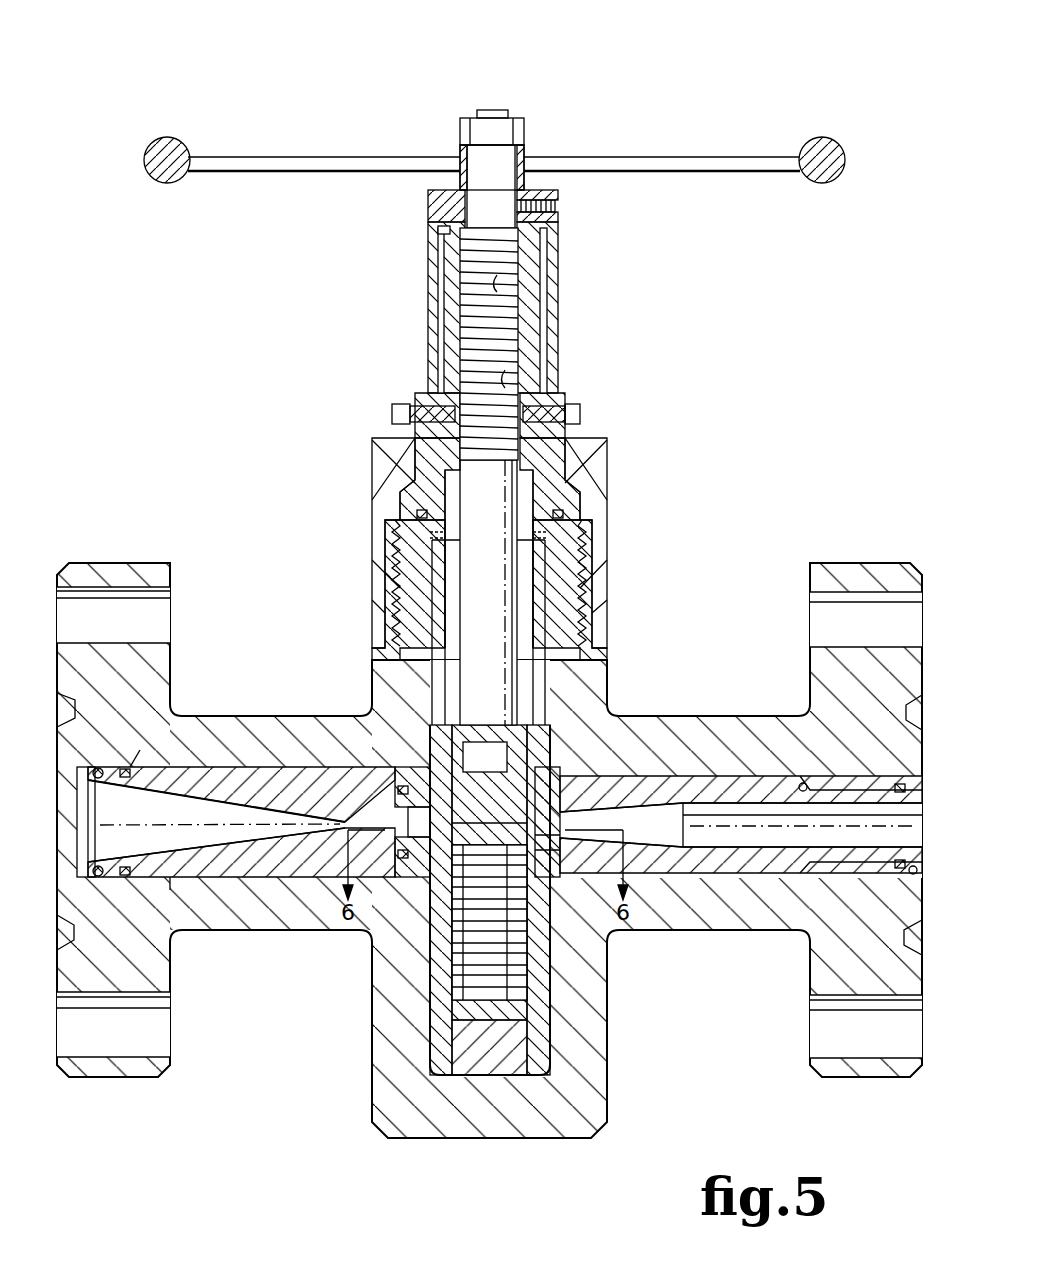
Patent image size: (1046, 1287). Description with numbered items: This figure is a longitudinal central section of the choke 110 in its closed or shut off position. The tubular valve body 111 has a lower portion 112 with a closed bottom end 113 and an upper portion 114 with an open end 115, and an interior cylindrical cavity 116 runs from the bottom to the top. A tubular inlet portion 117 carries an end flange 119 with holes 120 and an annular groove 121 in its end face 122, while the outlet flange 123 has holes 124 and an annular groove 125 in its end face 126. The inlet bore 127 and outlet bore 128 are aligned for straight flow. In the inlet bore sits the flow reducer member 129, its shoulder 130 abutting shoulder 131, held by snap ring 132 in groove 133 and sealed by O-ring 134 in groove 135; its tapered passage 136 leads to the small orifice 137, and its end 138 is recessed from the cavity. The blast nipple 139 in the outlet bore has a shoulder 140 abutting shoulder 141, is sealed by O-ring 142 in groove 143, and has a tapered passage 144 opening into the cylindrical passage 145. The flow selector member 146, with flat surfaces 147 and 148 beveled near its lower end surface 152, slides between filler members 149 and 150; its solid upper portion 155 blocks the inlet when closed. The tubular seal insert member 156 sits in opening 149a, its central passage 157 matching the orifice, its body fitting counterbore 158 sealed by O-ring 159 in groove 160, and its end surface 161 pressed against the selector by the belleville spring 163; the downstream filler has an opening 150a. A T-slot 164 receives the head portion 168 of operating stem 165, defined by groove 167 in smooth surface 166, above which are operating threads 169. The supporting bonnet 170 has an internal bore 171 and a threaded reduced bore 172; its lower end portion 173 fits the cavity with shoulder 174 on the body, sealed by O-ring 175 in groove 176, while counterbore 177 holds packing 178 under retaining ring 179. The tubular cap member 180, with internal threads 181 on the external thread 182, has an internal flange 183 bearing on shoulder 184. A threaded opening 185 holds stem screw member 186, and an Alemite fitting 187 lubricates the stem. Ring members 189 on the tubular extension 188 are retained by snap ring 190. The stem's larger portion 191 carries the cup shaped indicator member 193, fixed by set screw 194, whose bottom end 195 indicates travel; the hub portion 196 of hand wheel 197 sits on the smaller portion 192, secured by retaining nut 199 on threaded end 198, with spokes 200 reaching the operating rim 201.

The choke 110 is at (330, 700).
The valve body 111 is at (395, 668).
The lower portion 112 is at (607, 1100).
The closed bottom end 113 is at (520, 1138).
The upper portion 114 is at (605, 668).
The open end 115 is at (585, 545).
The interior cylindrical cavity 116 is at (440, 625).
The tubular inlet portion 117 is at (255, 915).
The end flange 119 is at (172, 975).
The holes 120 is at (160, 1057).
The annular groove 121 is at (85, 940).
The end face 122 is at (62, 1000).
The flange 123 is at (812, 960).
The holes 124 is at (820, 1058).
The annular groove 125 is at (906, 945).
The end face 126 is at (922, 990).
The internal bore 127 is at (295, 877).
The internal bore 128 is at (705, 873).
The flow reducer member 129 is at (258, 785).
The shoulder 130 is at (140, 750).
The shoulder 131 is at (120, 862).
The snap ring 132 is at (98, 767).
The peripheral groove 133 is at (98, 877).
The O-ring 134 is at (180, 930).
The peripheral groove 135 is at (124, 768).
The tapered interior passage 136 is at (200, 790).
The orifice 137 is at (330, 822).
The end of flow reducer 138 is at (440, 900).
The blast nipple 139 is at (740, 790).
The shoulder 140 is at (900, 873).
The shoulder 141 is at (830, 790).
The O-ring 142 is at (916, 878).
The peripheral groove 143 is at (900, 790).
The tapered passage 144 is at (630, 810).
The cylindrical passage 145 is at (740, 812).
The flow selector member 146 is at (436, 700).
The flat surface 147 is at (428, 745).
The flat surface 148 is at (555, 765).
The filler member 149 is at (440, 1030).
The opening 149a is at (400, 805).
The filler member 150 is at (550, 1020).
The opening 150a is at (638, 951).
The lower end surface 152 is at (490, 1075).
The upper portion 155 is at (545, 840).
The tubular seal insert member 156 is at (460, 840).
The central passage 157 is at (400, 870).
The counterbore 158 is at (405, 784).
The O-ring 159 is at (415, 877).
The peripheral groove 160 is at (395, 768).
The end surface 161 is at (470, 785).
The belleville spring 163 is at (455, 930).
The T-slot 164 is at (560, 730).
The operating stem 165 is at (470, 630).
The smooth cylindrical outer surface 166 is at (585, 590).
The groove 167 is at (508, 680).
The head portion 168 is at (482, 742).
The operating threads 169 is at (505, 300).
The supporting bonnet 170 is at (415, 490).
The internal bore 171 is at (510, 378).
The reduced diameter bore 172 is at (505, 280).
The lower end portion 173 is at (585, 570).
The shoulder 174 is at (565, 532).
The O-ring 175 is at (417, 512).
The peripheral groove 176 is at (400, 525).
The counterbore 177 is at (455, 490).
The packing 178 is at (545, 500).
The retaining ring 179 is at (445, 548).
The tubular cap member 180 is at (385, 590).
The internal threads 181 is at (590, 610).
The externally threaded surface 182 is at (590, 630).
The internal flange 183 is at (560, 470).
The shoulder 184 is at (390, 458).
The internally threaded opening 185 is at (410, 396).
The stem screw member 186 is at (395, 412).
The Alemite fitting 187 is at (575, 412).
The tubular extension 188 is at (440, 272).
The ring members 189 is at (440, 310).
The snap ring 190 is at (432, 232).
The larger diameter portion 191 is at (440, 205).
The smaller diameter portion 192 is at (460, 180).
The cup shaped indicator member 193 is at (556, 232).
The set screw 194 is at (558, 196).
The bottom end 195 is at (430, 372).
The hub portion 196 is at (524, 150).
The hand wheel 197 is at (300, 152).
The threaded upper end 198 is at (490, 110).
The retaining nut 199 is at (500, 130).
The spokes 200 is at (255, 172).
The operating rim 201 is at (150, 172).